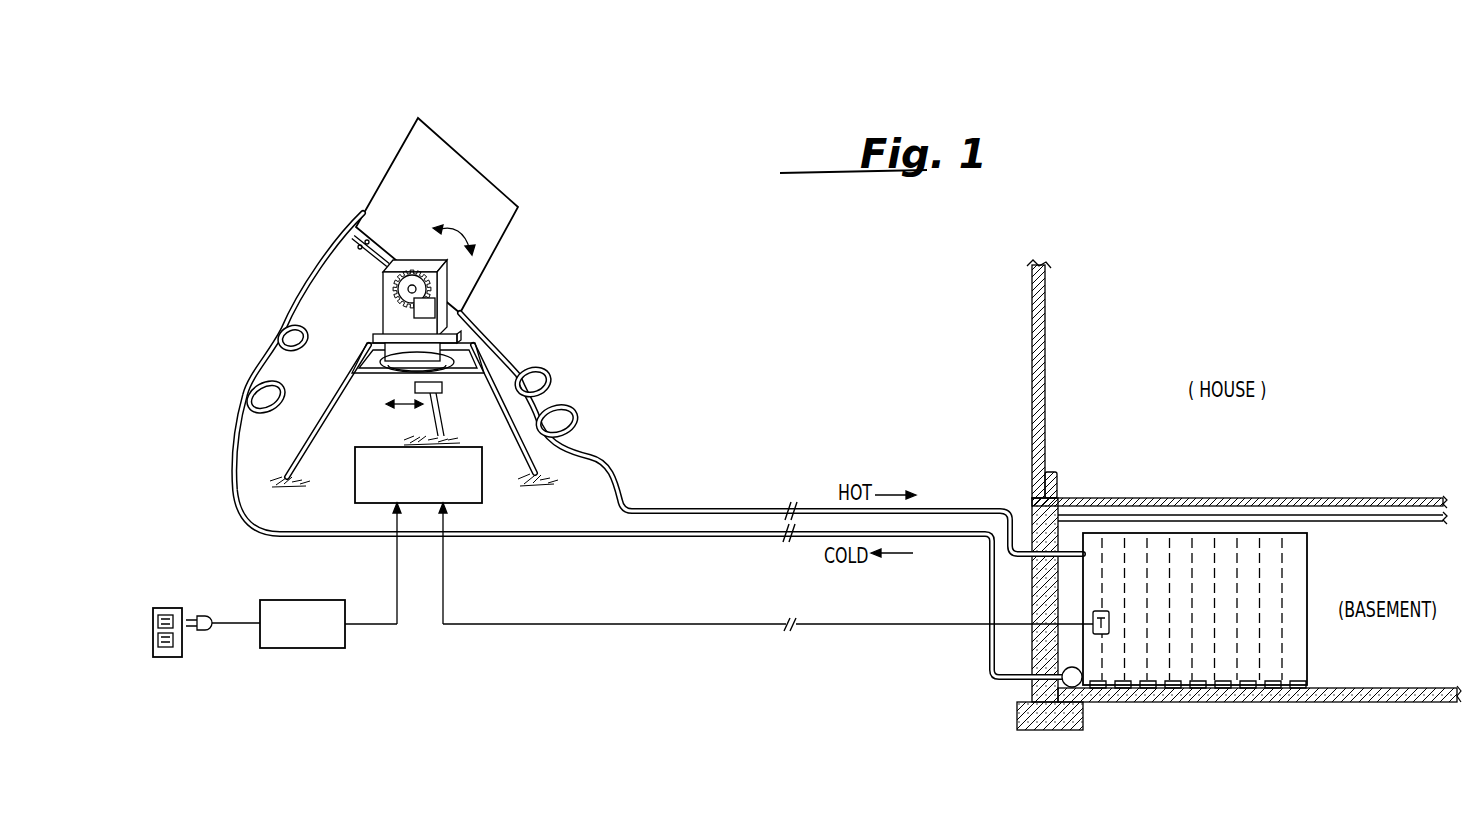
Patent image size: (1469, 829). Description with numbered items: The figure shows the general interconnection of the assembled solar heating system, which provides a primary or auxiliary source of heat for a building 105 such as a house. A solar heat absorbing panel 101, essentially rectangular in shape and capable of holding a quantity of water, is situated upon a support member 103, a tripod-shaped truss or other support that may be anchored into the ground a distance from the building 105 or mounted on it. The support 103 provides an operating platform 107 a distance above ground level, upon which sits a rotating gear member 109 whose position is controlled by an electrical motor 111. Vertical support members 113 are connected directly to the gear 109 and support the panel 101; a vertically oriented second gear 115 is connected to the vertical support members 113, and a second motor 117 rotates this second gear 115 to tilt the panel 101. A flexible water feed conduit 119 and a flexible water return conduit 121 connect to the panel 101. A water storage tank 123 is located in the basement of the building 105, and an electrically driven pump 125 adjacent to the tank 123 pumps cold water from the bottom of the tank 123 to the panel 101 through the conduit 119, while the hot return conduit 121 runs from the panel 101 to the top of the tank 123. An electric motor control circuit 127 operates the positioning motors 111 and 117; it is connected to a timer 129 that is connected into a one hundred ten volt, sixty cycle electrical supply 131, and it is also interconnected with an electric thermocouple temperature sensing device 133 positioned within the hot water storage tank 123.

The solar heat absorbing panel 101 is at (485, 195).
The support member 103 is at (493, 380).
The building 105 is at (1033, 376).
The operating platform 107 is at (382, 368).
The rotating gear member 109 is at (394, 371).
The electrical motor 111 is at (442, 388).
The vertical support members 113 is at (400, 323).
The second gear 115 is at (390, 286).
The second motor 117 is at (432, 306).
The flexible water feed conduit 119 is at (240, 420).
The flexible water return conduit 121 is at (577, 411).
The water storage tank 123 is at (1182, 672).
The electrically driven pump 125 is at (1043, 688).
The electric motor control circuit 127 is at (358, 488).
The timer 129 is at (314, 602).
The electrical supply 131 is at (162, 607).
The electric thermocouple temperature sensing device 133 is at (1107, 614).